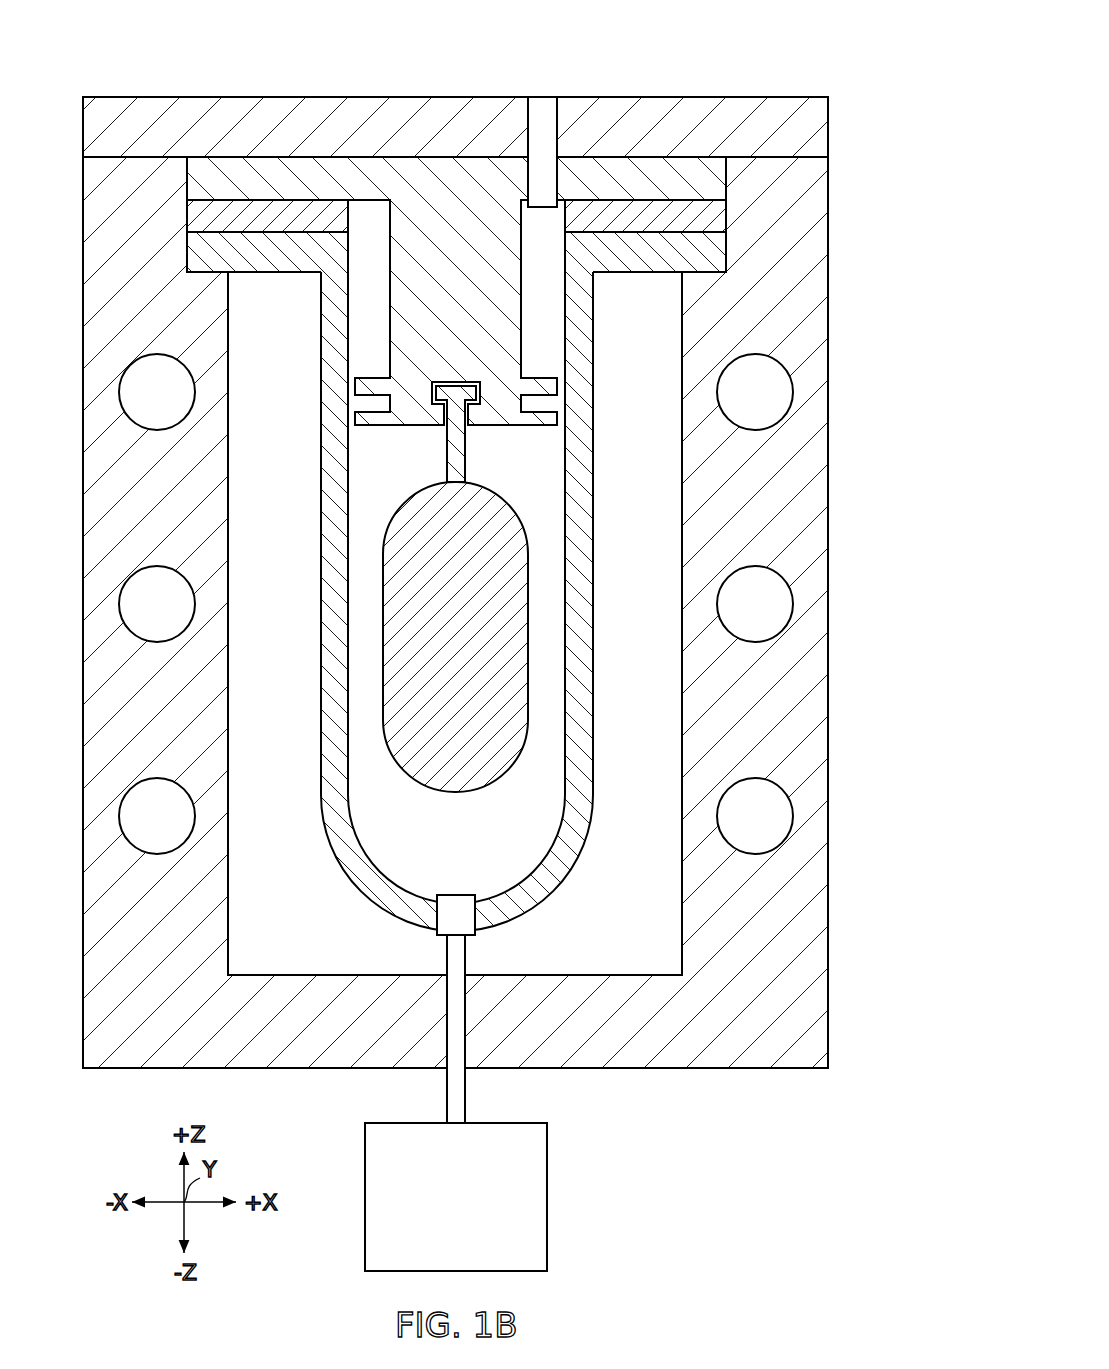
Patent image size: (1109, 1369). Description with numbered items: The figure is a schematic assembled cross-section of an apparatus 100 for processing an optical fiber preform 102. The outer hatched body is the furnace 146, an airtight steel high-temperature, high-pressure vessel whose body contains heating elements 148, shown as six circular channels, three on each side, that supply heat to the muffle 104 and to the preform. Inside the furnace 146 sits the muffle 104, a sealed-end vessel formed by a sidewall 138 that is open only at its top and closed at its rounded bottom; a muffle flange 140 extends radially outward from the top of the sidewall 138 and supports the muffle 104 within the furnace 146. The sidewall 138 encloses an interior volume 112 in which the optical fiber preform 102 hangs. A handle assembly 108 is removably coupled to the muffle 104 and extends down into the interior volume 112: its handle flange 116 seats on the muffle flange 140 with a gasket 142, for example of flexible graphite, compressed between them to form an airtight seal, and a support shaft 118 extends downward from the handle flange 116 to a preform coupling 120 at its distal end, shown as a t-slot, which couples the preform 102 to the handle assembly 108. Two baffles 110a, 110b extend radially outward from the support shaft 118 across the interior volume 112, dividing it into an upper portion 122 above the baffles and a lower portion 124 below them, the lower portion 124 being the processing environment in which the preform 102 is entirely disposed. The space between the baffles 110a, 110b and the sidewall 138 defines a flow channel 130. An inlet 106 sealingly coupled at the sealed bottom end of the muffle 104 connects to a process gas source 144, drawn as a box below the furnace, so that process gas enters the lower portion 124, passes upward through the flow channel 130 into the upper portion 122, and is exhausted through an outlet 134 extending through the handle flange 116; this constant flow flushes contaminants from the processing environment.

The apparatus 100 is at (833, 83).
The optical fiber preform 102 is at (476, 623).
The muffle 104 is at (597, 547).
The inlet 106 is at (458, 928).
The handle assembly 108 is at (412, 153).
The baffle 110a is at (355, 416).
The baffle 110b is at (355, 384).
The interior volume 112 is at (473, 850).
The handle flange 116 is at (357, 160).
The support shaft 118 is at (513, 309).
The preform coupling 120 is at (455, 364).
The upper portion 122 is at (360, 323).
The lower portion 124 is at (360, 622).
The flow channel 130 is at (533, 387).
The outlet 134 is at (545, 162).
The sidewall 138 is at (326, 752).
The muffle flange 140 is at (718, 253).
The gasket 142 is at (193, 217).
The process gas source 144 is at (537, 1195).
The furnace 146 is at (857, 177).
The heating elements 148 is at (157, 354).